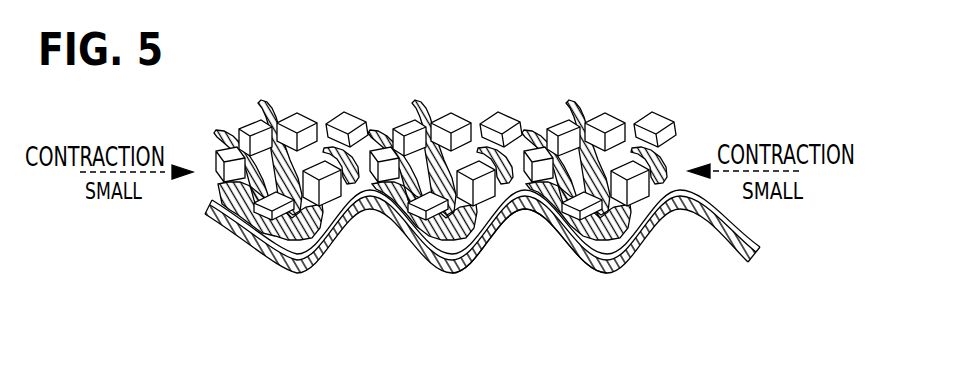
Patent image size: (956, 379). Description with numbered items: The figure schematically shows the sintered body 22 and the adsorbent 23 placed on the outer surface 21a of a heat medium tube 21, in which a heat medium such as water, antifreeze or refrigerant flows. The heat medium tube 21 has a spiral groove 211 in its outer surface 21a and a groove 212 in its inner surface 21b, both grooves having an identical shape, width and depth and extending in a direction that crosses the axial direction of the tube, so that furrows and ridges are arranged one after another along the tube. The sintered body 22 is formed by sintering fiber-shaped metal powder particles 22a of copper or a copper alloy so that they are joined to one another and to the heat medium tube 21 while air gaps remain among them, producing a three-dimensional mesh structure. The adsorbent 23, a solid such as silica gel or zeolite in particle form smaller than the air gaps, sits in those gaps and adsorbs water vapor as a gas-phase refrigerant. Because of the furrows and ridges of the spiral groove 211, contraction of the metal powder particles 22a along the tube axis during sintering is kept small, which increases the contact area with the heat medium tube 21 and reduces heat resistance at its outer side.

The heat medium tube 21 is at (482, 272).
The outer surface of the heat medium tube 21a is at (723, 193).
The inner surface of the heat medium tube 21b is at (377, 211).
The spiral groove of the outer surface 211 is at (622, 245).
The groove of the inner surface 212 is at (560, 241).
The sintered body 22 is at (565, 97).
The metal powder particles 22a is at (612, 118).
The adsorbent 23 is at (675, 113).